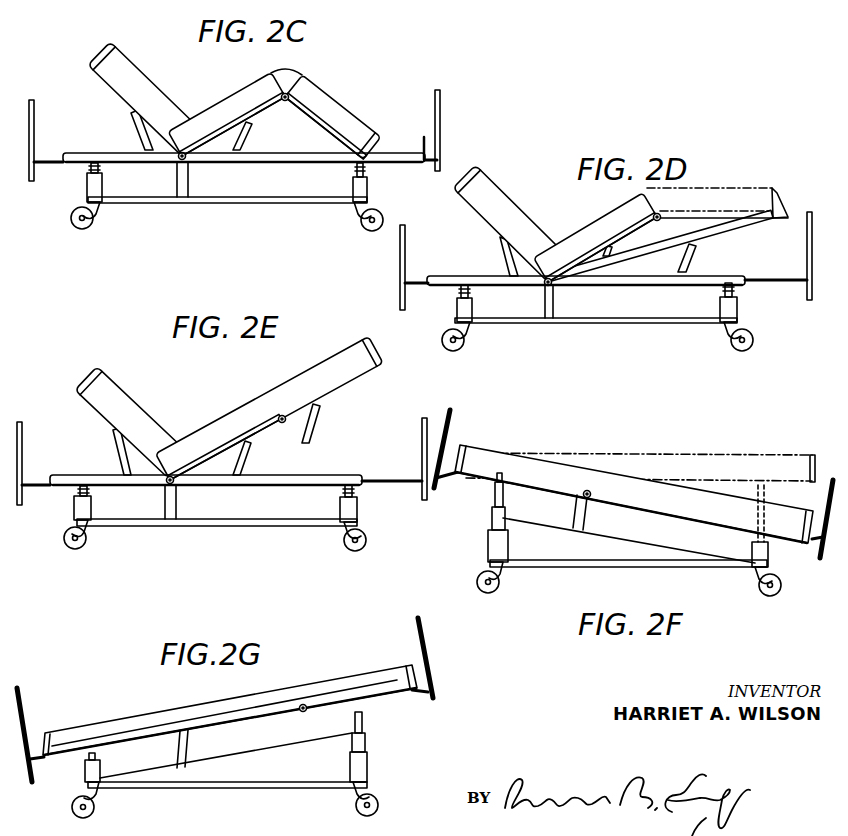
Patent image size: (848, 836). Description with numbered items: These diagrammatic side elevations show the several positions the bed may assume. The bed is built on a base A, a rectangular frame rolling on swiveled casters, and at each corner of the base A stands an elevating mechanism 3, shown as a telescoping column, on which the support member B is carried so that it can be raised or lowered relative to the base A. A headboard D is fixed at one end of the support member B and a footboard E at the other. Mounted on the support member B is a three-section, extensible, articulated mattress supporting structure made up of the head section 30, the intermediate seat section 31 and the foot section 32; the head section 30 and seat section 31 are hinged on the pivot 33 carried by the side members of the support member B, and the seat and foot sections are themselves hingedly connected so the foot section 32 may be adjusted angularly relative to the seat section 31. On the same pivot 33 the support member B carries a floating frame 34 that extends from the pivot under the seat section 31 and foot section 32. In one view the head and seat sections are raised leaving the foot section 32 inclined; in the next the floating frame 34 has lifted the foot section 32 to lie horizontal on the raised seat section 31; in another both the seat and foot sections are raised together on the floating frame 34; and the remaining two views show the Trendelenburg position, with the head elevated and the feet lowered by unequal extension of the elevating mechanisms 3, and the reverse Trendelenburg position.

In FIG. 2C, the elevating mechanism 3 is at (80, 189).
In FIG. 2F, the elevating mechanism 3 is at (478, 550).
In FIG. 2G, the elevating mechanism 3 is at (375, 770).
In FIG. 2C, the head section 30 is at (138, 110).
In FIG. 2D, the head section 30 is at (472, 203).
In FIG. 2C, the intermediate seat section 31 is at (237, 118).
In FIG. 2D, the intermediate seat section 31 is at (622, 235).
In FIG. 2C, the foot section 32 is at (325, 123).
In FIG. 2D, the foot section 32 is at (703, 215).
In FIG. 2D, the pivot 33 is at (543, 285).
In FIG. 2C, the floating frame 34 is at (402, 152).
In FIG. 2D, the floating frame 34 is at (733, 230).
In FIG. 2E, the floating frame 34 is at (343, 391).
In FIG. 2C, the base A is at (163, 203).
In FIG. 2D, the base A is at (513, 324).
In FIG. 2E, the base A is at (186, 527).
In FIG. 2F, the base A is at (572, 568).
In FIG. 2G, the base A is at (258, 788).
In FIG. 2C, the support member B is at (77, 152).
In FIG. 2D, the support member B is at (460, 275).
In FIG. 2E, the support member B is at (73, 482).
In FIG. 2C, the headboard D is at (39, 95).
In FIG. 2C, the footboard E is at (445, 130).